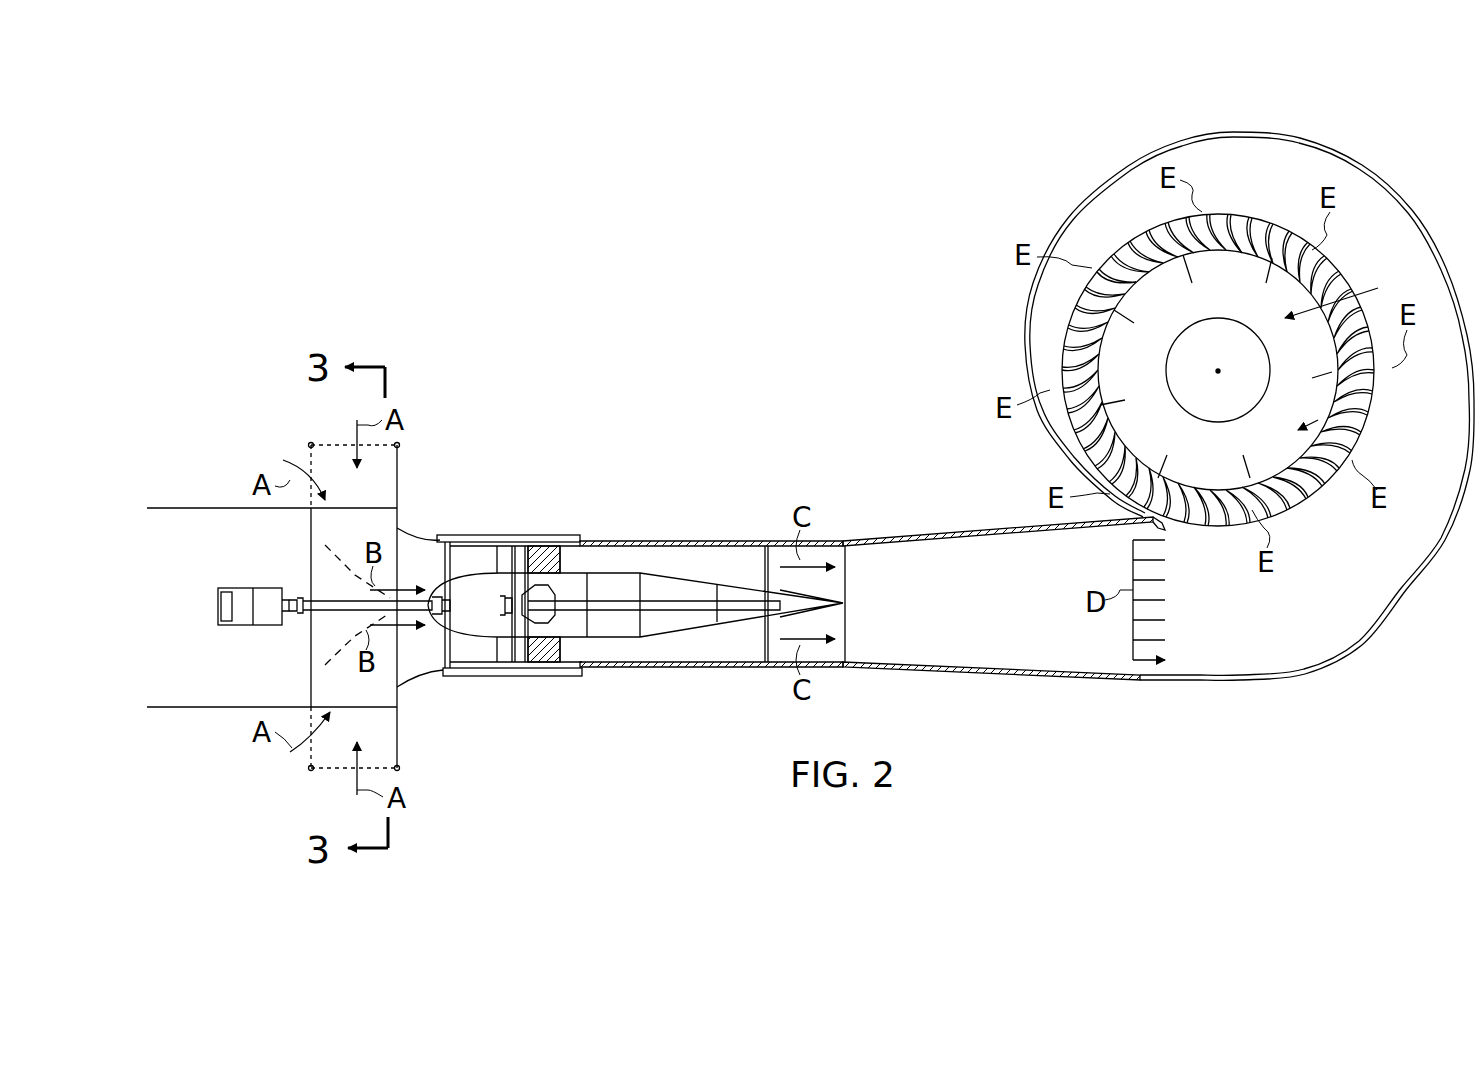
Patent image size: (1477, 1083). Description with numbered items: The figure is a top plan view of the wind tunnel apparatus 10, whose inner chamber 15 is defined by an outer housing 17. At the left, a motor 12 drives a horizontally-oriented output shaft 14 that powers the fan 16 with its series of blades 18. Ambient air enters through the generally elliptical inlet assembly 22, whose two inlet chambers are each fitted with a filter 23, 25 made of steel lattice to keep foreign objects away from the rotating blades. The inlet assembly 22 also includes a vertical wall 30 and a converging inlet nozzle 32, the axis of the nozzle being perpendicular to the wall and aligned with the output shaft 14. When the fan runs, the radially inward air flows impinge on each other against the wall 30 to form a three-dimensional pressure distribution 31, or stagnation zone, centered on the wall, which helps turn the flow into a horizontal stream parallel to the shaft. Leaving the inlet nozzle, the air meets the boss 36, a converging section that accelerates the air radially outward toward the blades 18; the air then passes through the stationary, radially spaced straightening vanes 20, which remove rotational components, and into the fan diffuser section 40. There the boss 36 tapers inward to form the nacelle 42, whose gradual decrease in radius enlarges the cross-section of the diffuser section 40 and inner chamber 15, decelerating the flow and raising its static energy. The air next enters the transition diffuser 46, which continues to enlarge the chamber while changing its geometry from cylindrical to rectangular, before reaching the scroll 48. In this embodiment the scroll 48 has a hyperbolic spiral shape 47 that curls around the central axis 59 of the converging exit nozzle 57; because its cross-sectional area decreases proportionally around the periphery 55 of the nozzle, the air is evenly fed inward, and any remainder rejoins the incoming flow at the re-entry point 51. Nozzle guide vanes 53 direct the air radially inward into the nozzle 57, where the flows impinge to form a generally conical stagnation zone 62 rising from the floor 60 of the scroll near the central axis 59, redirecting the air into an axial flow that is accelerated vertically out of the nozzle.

The apparatus 10 is at (764, 375).
The motor 12 is at (250, 590).
The output shaft 14 is at (302, 612).
The inner chamber 15 is at (970, 560).
The fan 16 is at (545, 580).
The outer housing 17 is at (655, 541).
The blades 18 is at (513, 668).
The straightening vanes 20 is at (560, 562).
The inlet assembly 22 is at (407, 498).
The filter 23 is at (312, 445).
The filter 25 is at (311, 770).
The vertical wall 30 is at (312, 515).
The pressure distribution 31 is at (327, 571).
The converging inlet nozzle 32 is at (478, 535).
The boss 36 is at (478, 668).
The fan diffuser section 40 is at (725, 668).
The nacelle 42 is at (695, 576).
The transition diffuser 46 is at (1065, 677).
The hyperbolic spiral shape 47 is at (1397, 215).
The scroll 48 is at (1215, 660).
The re-entry point 51 is at (1162, 528).
The nozzle guide vanes 53 is at (1372, 378).
The periphery 55 is at (1302, 488).
The converging exit nozzle 57 is at (1354, 288).
The central axis 59 is at (1218, 375).
The floor 60 is at (1242, 372).
The stagnation zone 62 is at (1230, 330).